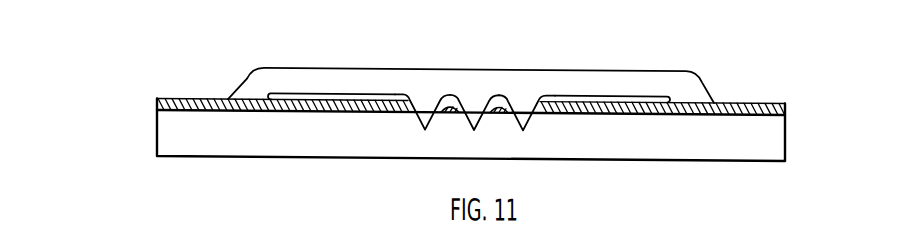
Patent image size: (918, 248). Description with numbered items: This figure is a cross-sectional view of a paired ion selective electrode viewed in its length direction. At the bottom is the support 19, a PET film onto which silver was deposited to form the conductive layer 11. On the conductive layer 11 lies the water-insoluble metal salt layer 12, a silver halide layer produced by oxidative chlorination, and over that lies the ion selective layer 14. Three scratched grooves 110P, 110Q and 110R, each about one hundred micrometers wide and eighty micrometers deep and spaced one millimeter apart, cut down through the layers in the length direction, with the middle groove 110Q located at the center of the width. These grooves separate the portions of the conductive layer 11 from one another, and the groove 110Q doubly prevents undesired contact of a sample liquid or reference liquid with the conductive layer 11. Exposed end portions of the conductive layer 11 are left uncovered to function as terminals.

The conductive layer 11 is at (160, 104).
The water-insoluble metal salt layer 12 is at (274, 95).
The ion selective layer 14 is at (283, 72).
The support 19 is at (176, 142).
The groove 110P is at (427, 115).
The groove 110Q is at (475, 120).
The groove 110R is at (525, 119).